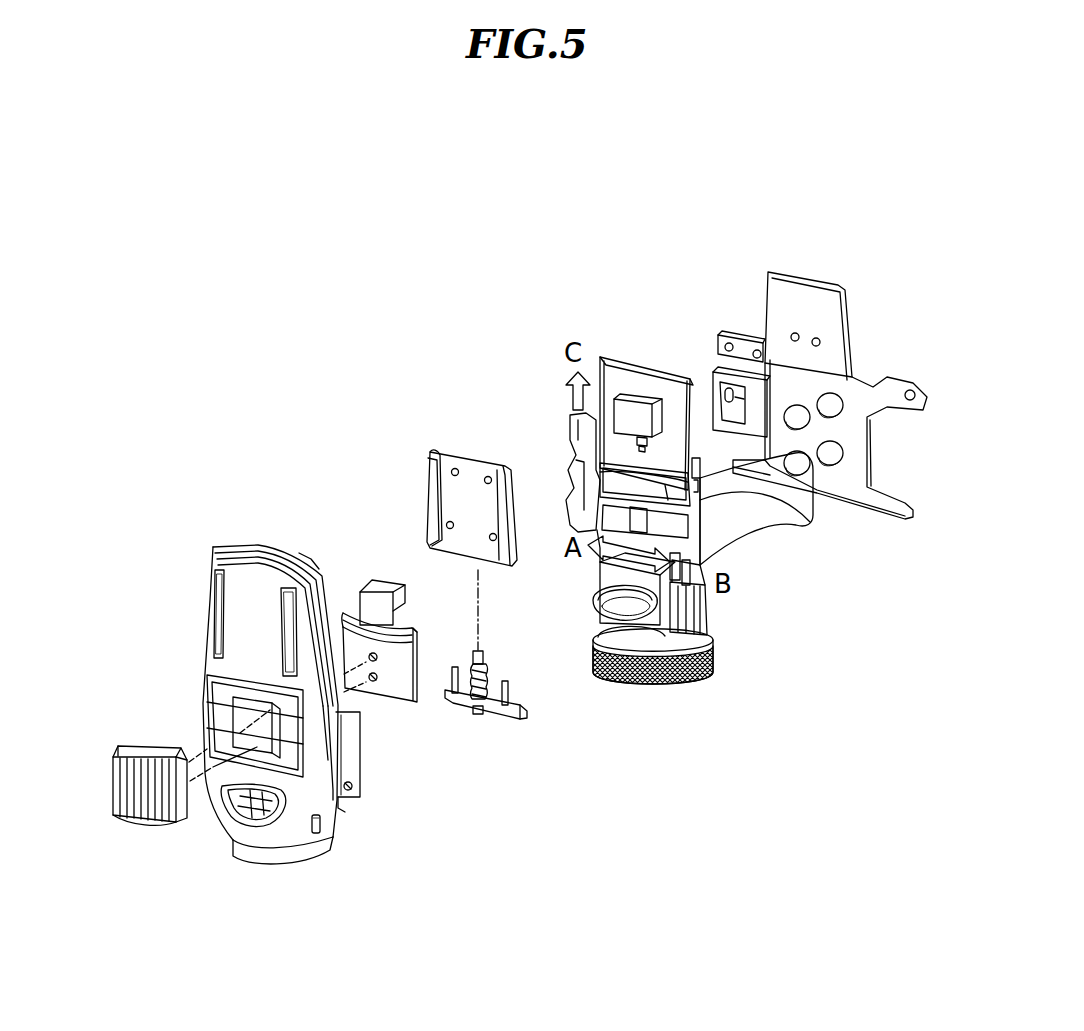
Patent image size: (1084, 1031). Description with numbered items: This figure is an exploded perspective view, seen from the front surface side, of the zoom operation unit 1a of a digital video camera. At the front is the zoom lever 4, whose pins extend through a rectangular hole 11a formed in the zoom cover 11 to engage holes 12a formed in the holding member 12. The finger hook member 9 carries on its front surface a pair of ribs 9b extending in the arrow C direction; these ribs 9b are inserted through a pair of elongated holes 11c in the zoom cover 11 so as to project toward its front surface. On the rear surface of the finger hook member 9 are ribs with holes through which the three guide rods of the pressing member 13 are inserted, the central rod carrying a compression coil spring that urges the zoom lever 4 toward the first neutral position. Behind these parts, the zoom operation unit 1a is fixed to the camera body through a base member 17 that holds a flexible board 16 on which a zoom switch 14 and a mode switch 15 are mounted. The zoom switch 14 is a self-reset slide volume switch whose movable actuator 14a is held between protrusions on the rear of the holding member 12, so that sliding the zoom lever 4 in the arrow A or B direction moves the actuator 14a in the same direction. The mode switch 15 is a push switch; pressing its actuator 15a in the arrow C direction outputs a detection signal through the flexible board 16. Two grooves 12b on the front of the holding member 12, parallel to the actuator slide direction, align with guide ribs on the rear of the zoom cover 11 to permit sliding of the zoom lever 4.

The zoom operation unit 1a is at (583, 267).
The zoom lever 4 is at (142, 750).
The finger hook member 9 is at (476, 462).
The ribs 9b is at (432, 472).
The zoom cover 11 is at (250, 550).
The rectangular hole 11a is at (250, 705).
The elongated holes 11c is at (218, 590).
The holding member 12 is at (378, 584).
The holes 12a is at (373, 680).
The grooves 12b is at (393, 652).
The pressing member 13 is at (520, 706).
The zoom switch 14 is at (663, 493).
The actuator 14a is at (598, 490).
The mode switch 15 is at (632, 400).
The actuator 15a is at (640, 438).
The flexible board 16 is at (663, 388).
The base member 17 is at (804, 298).